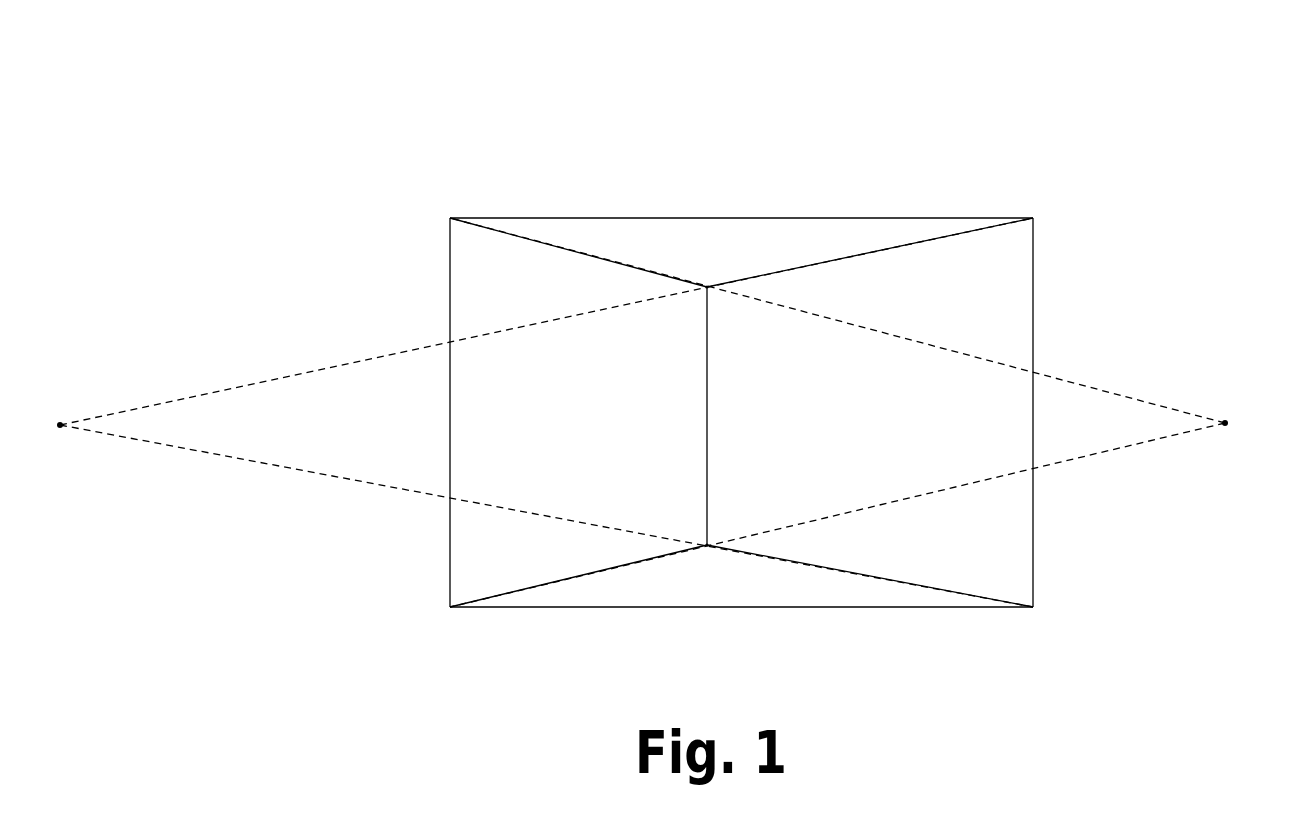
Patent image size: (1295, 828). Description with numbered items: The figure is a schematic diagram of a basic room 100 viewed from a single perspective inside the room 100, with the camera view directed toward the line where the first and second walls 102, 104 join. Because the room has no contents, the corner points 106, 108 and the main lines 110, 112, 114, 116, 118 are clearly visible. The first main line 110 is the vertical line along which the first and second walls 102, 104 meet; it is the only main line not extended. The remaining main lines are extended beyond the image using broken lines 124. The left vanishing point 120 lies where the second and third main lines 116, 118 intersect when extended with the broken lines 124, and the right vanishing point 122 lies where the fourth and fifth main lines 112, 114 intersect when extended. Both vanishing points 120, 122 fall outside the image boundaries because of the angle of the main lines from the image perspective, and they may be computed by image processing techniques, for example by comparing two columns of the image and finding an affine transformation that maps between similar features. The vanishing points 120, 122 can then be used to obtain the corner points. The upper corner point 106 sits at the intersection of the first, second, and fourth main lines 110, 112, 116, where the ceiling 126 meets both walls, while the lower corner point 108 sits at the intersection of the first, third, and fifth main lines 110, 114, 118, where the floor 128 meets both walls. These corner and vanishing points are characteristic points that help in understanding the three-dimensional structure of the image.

The room 100 is at (458, 118).
The first wall 102 is at (465, 575).
The second wall 104 is at (1013, 575).
The upper corner point 106 is at (706, 275).
The lower corner point 108 is at (707, 560).
The first main line 110 is at (725, 340).
The fourth main line 112 is at (600, 242).
The fifth main line 114 is at (590, 580).
The second main line 116 is at (968, 245).
The third main line 118 is at (838, 583).
The left vanishing point 120 is at (55, 400).
The right vanishing point 122 is at (1222, 400).
The broken lines 124 is at (387, 372).
The ceiling 126 is at (902, 232).
The floor 128 is at (915, 598).